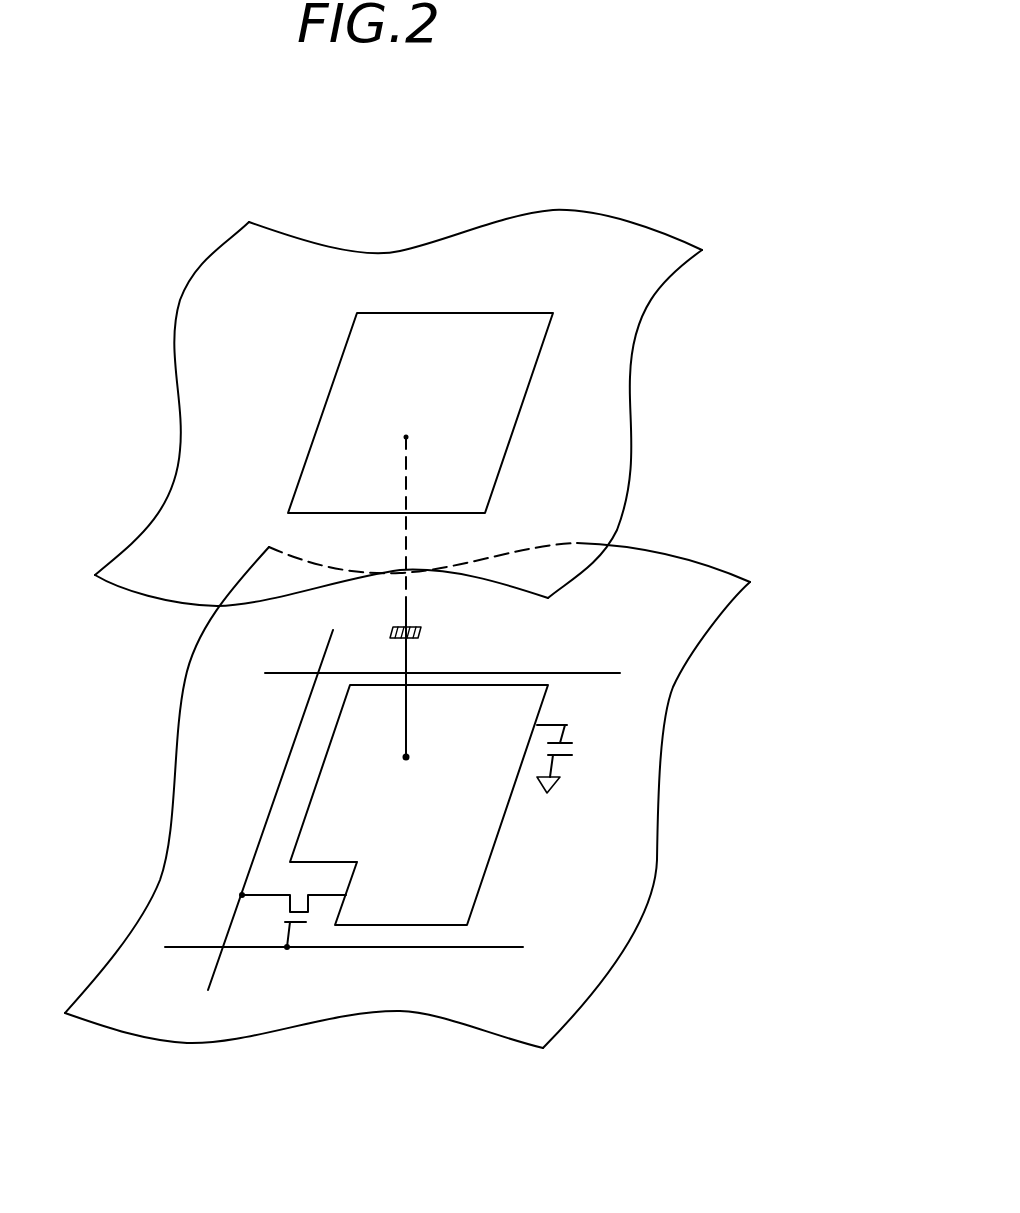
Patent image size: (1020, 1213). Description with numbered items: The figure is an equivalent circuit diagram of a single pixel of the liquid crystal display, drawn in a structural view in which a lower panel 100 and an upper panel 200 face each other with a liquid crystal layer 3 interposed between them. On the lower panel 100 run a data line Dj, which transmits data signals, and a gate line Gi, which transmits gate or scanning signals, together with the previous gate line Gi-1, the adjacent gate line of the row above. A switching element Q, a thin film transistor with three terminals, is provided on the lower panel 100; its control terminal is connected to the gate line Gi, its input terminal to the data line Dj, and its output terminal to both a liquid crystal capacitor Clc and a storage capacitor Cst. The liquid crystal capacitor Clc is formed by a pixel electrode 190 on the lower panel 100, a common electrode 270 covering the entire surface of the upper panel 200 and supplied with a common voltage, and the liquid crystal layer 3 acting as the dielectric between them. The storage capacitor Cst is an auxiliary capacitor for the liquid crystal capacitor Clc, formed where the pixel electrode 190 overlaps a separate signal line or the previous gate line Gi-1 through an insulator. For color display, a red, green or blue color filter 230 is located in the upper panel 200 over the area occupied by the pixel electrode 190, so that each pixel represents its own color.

The liquid crystal layer 3 is at (84, 689).
The lower panel 100 is at (676, 771).
The upper panel 200 is at (648, 437).
The common electrode 270 is at (627, 377).
The color filter 230 is at (517, 427).
The pixel electrode 190 is at (490, 858).
The switching element Q is at (292, 921).
The storage capacitor Cst is at (574, 759).
The liquid crystal capacitor Clc is at (433, 598).
The data line Dj is at (270, 810).
The previous gate line Gi-1 is at (426, 692).
The gate line Gi is at (343, 932).